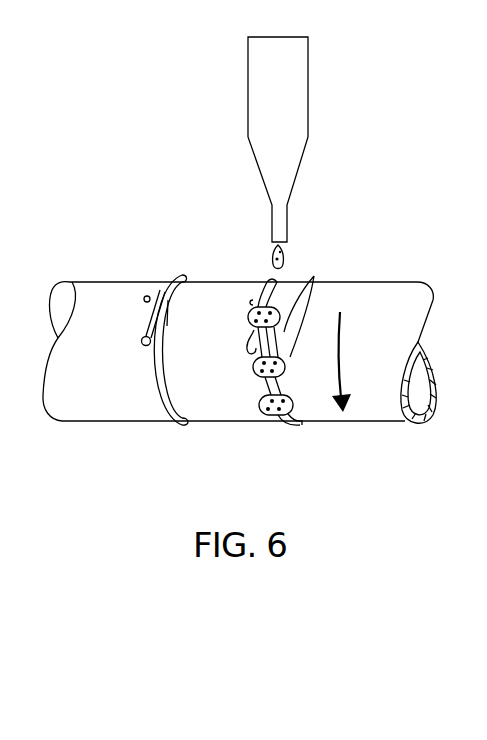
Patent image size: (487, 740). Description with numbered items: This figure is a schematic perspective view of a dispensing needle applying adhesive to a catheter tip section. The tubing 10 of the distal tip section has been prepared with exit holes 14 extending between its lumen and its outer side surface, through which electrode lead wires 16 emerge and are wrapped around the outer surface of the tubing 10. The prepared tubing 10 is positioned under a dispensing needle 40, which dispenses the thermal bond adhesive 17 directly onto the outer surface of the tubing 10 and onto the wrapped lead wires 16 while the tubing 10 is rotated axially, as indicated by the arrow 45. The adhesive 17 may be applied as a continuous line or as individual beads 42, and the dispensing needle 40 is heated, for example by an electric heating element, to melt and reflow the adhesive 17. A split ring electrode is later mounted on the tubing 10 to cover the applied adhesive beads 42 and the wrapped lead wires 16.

The tubing 10 is at (110, 290).
The exit hole 14 is at (140, 347).
The electrode lead wire 16 is at (171, 277).
The thermal bond adhesive 17 is at (270, 258).
The dispensing needle 40 is at (310, 88).
The individual beads 42 is at (313, 280).
The arrow 45 is at (342, 345).